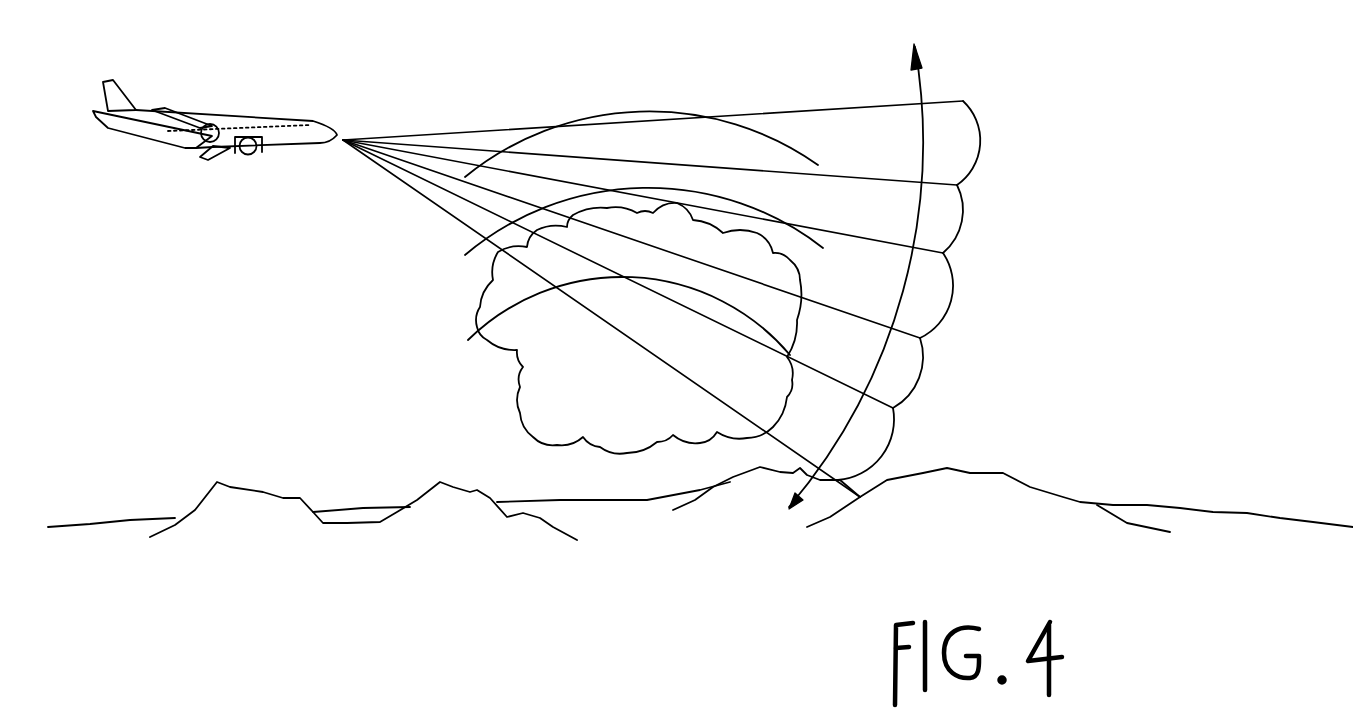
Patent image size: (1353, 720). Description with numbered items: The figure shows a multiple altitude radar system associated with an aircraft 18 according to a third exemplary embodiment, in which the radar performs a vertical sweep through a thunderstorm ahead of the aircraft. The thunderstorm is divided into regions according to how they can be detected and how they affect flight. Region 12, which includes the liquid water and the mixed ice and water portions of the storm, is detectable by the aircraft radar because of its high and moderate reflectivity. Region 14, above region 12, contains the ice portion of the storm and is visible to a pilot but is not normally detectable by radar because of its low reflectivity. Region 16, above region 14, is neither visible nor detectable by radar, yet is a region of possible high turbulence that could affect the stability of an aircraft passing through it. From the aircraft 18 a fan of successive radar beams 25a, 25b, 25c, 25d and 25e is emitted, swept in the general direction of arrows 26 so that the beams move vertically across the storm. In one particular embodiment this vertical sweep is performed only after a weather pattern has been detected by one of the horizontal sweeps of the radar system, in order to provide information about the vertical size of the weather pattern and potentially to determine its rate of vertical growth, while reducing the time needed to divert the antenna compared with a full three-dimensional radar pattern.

The aircraft 18 is at (273, 120).
The region 16 is at (618, 112).
The region 14 is at (740, 203).
The region 12 is at (810, 305).
The arrows 26 is at (924, 84).
The radar beam 25a is at (894, 432).
The radar beam 25b is at (923, 360).
The radar beam 25c is at (953, 290).
The radar beam 25d is at (965, 212).
The radar beam 25e is at (980, 130).